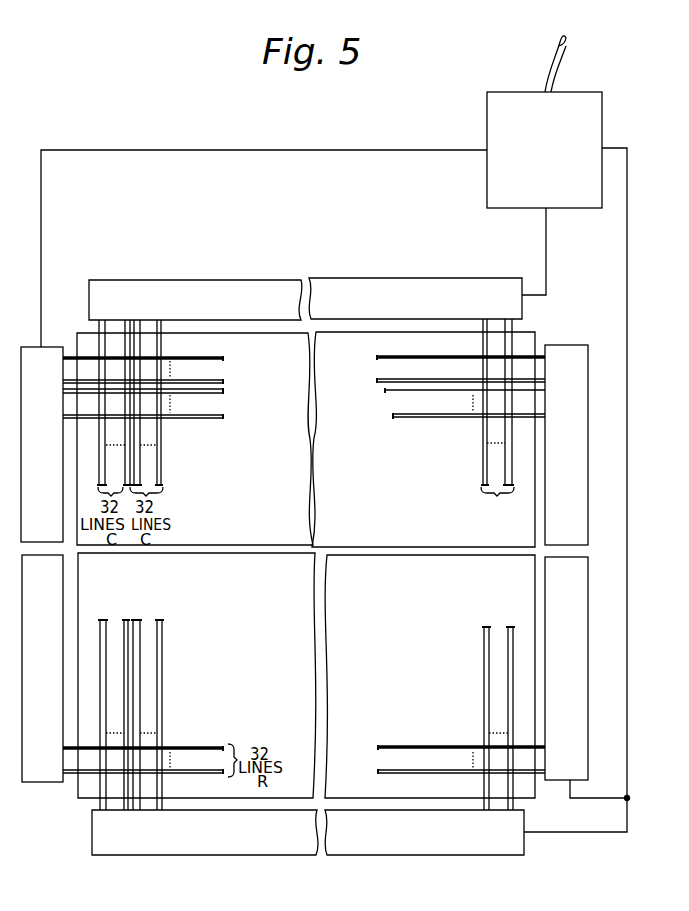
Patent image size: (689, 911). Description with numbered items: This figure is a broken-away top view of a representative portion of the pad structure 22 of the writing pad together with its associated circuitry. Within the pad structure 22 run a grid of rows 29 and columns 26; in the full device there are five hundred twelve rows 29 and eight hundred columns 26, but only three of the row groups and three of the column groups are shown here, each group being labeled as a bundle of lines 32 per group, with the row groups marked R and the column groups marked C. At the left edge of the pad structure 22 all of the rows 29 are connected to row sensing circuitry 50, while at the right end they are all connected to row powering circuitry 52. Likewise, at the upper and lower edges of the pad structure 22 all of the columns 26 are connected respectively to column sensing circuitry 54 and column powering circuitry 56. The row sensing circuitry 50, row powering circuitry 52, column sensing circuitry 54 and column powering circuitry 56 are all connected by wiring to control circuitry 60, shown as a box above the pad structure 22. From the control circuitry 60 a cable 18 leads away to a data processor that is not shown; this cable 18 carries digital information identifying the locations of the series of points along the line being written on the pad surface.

The cable 18 is at (568, 50).
The control circuitry 60 is at (553, 197).
The pad structure 22 is at (527, 803).
The column sensing circuitry 54 is at (127, 315).
The column powering circuitry 56 is at (127, 850).
The row sensing circuitry 50 is at (54, 767).
The row powering circuitry 52 is at (577, 763).
The columns 26 is at (513, 338).
The rows 29 is at (527, 350).
The lines 32 is at (227, 420).